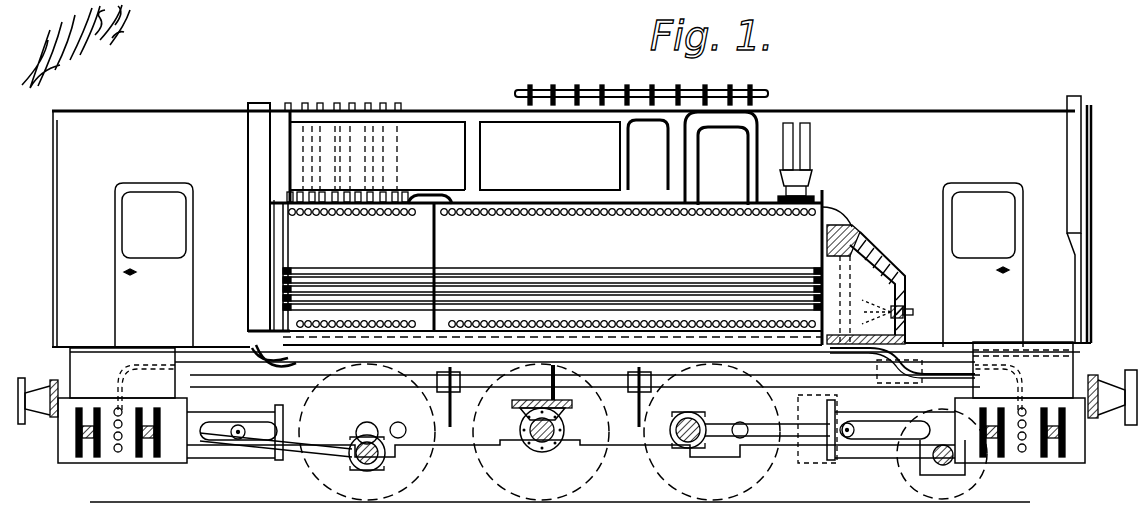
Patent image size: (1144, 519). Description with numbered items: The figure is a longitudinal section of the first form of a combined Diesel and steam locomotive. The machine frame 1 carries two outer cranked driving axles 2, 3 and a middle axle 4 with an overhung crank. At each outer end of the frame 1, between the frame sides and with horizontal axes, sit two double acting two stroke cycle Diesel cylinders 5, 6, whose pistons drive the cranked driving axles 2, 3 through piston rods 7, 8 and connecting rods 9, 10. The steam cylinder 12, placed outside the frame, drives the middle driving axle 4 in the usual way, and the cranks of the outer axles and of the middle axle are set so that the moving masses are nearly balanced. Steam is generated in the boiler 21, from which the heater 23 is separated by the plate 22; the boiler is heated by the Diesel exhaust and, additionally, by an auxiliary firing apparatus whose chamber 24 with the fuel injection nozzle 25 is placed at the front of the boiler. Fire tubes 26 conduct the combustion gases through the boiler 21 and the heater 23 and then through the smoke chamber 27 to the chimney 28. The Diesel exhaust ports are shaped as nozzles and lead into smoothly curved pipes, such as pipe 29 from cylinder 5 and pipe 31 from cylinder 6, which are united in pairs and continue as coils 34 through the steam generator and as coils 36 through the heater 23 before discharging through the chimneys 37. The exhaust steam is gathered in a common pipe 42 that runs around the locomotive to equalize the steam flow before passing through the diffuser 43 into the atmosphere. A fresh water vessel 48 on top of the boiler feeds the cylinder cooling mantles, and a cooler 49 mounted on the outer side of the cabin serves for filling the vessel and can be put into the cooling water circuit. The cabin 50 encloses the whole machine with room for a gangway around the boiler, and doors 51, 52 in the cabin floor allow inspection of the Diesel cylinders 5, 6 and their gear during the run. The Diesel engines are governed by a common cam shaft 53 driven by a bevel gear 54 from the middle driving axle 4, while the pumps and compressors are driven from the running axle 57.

The frame 1 is at (627, 440).
The cranked driving axle 2 is at (378, 458).
The cranked driving axle 3 is at (695, 443).
The middle axle 4 is at (538, 445).
The Diesel cylinder 5 is at (127, 455).
The Diesel cylinder 6 is at (1055, 458).
The piston rod 7 is at (219, 440).
The piston rod 8 is at (872, 430).
The connecting rod 9 is at (313, 447).
The connecting rod 10 is at (765, 438).
The steam cylinder 12 is at (808, 462).
The boiler 21 is at (628, 268).
The plate 22 is at (437, 248).
The heater 23 is at (349, 267).
The chamber 24 is at (862, 232).
The fuel injection nozzle 25 is at (900, 310).
The fire tubes 26 is at (740, 284).
The smoke chamber 27 is at (256, 263).
The chimney 28 is at (247, 171).
The exhaust pipe 29 is at (214, 357).
The exhaust pipe 31 is at (893, 349).
The coils 34 is at (634, 215).
The coils 36 is at (386, 215).
The chimneys 37 is at (335, 100).
The common pipe 42 is at (1079, 283).
The diffuser 43 is at (1070, 138).
The fresh water vessel 48 is at (428, 130).
The cooler 49 is at (590, 92).
The cabin 50 is at (203, 111).
The door 51 is at (134, 350).
The door 52 is at (1001, 342).
The cam shaft 53 is at (348, 382).
The bevel gear 54 is at (517, 420).
The running axle 57 is at (945, 462).